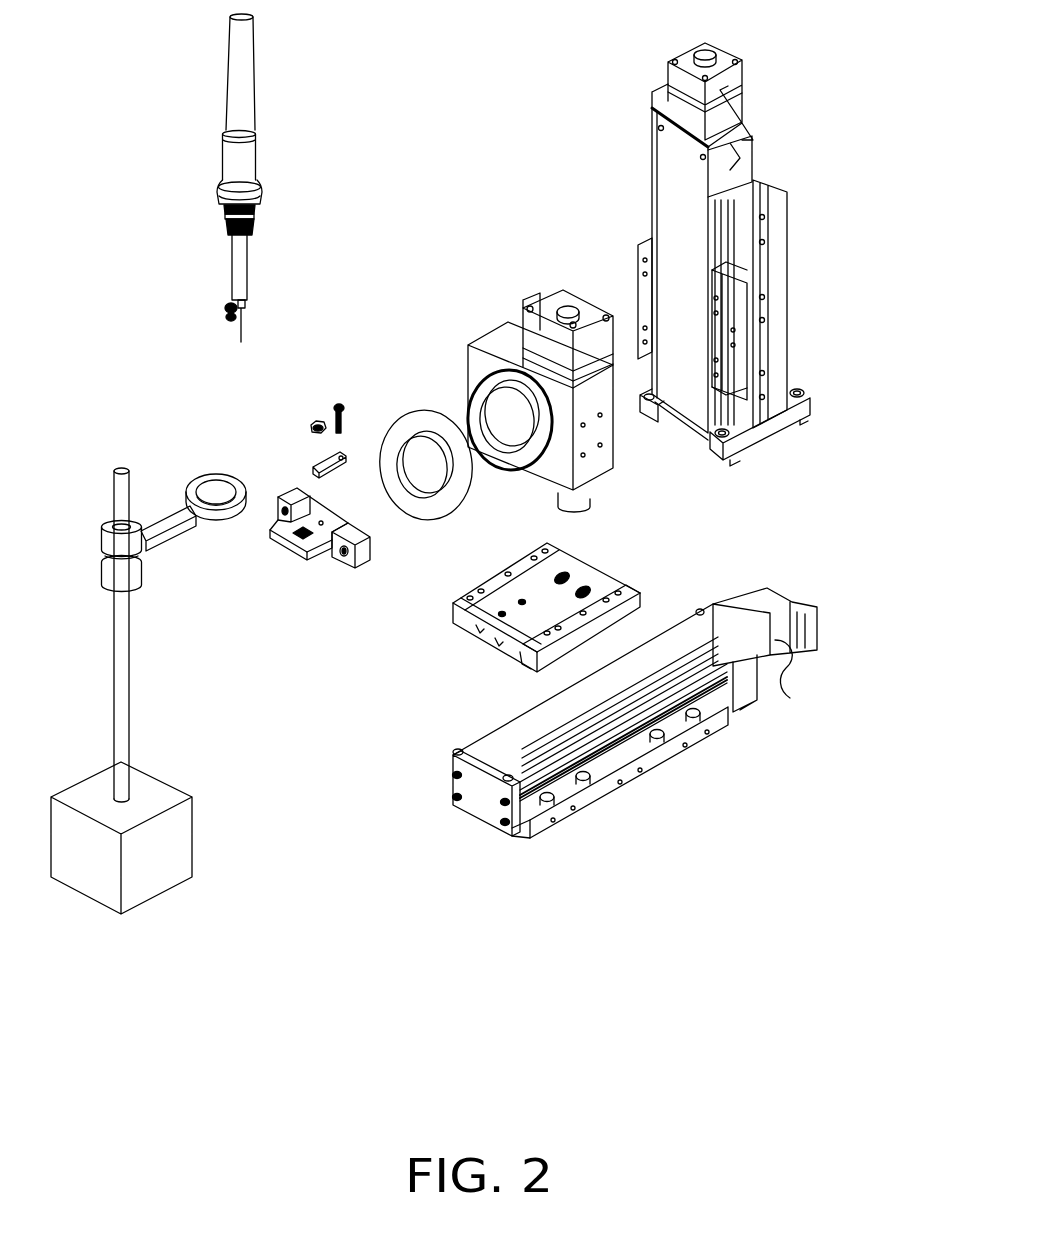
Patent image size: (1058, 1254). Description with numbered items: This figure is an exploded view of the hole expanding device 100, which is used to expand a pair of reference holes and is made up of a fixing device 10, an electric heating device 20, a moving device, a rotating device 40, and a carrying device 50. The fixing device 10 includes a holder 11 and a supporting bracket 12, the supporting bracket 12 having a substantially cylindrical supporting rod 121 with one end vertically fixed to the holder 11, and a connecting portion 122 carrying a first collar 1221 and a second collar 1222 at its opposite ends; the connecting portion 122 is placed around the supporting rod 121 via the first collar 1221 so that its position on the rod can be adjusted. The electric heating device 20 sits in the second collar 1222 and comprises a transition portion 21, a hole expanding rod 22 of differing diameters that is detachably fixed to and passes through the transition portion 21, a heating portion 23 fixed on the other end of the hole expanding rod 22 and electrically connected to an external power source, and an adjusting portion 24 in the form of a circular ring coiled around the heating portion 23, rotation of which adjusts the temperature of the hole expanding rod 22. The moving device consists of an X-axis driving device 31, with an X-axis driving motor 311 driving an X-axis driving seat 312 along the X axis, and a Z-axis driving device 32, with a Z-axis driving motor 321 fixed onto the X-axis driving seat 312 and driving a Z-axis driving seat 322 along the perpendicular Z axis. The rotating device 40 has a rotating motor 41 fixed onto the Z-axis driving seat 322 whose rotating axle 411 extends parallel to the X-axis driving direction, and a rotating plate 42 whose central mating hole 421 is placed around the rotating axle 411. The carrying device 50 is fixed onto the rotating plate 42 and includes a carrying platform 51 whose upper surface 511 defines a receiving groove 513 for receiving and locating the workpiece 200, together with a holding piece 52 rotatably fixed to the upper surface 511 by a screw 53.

The hole expanding device 100 is at (478, 51).
The fixing device 10 is at (240, 670).
The holder 11 is at (151, 788).
The supporting bracket 12 is at (123, 696).
The supporting rod 121 is at (120, 631).
The connecting portion 122 is at (179, 527).
The first collar 1221 is at (109, 547).
The second collar 1222 is at (205, 478).
The electric heating device 20 is at (138, 127).
The transition portion 21 is at (235, 260).
The hole expanding rod 22 is at (237, 332).
The heating portion 23 is at (233, 157).
The adjusting portion 24 is at (223, 192).
The workpiece 200 is at (316, 427).
The X-axis driving device 31 is at (753, 540).
The X-axis driving motor 311 is at (717, 627).
The X-axis driving seat 312 is at (603, 583).
The Z-axis driving device 32 is at (862, 268).
The Z-axis driving motor 321 is at (767, 358).
The Z-axis driving seat 322 is at (738, 298).
The rotating device 40 is at (476, 258).
The rotating motor 41 is at (505, 340).
The rotating axle 411 is at (512, 437).
The rotating plate 42 is at (412, 425).
The mating hole 421 is at (438, 480).
The carrying device 50 is at (286, 403).
The carrying platform 51 is at (292, 497).
The upper surface 511 is at (343, 535).
The receiving groove 513 is at (295, 537).
The holding piece 52 is at (320, 460).
The screw 53 is at (339, 406).